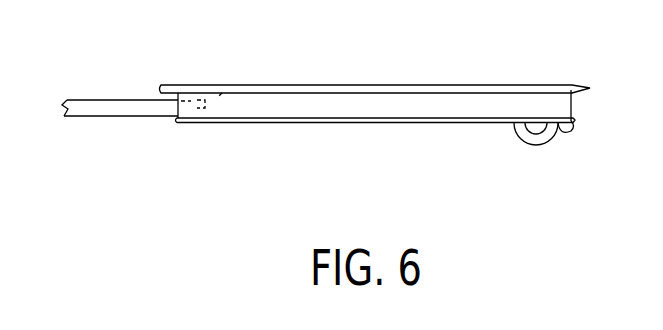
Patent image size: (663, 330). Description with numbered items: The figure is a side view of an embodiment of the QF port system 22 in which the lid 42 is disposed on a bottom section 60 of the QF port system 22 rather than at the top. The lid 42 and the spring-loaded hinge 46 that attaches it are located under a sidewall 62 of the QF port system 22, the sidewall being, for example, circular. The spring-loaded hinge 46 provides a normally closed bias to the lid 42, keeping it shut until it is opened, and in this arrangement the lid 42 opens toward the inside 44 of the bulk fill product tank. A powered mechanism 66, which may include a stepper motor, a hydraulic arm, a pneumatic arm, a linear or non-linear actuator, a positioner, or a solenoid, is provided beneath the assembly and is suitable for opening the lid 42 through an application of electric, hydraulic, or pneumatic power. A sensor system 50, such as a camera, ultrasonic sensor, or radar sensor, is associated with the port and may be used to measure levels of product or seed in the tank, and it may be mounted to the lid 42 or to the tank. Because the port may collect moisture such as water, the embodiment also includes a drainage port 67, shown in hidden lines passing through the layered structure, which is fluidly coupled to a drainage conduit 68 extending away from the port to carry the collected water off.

The QF port system 22 is at (362, 62).
The lid 42 is at (457, 123).
The inside portion 44 is at (318, 165).
The spring-loaded hinge 46 is at (570, 131).
The sensor system 50 is at (168, 87).
The bottom section 60 is at (250, 123).
The sidewall 62 is at (358, 105).
The powered mechanism 66 is at (527, 139).
The drainage port 67 is at (223, 86).
The drainage conduit 68 is at (108, 117).